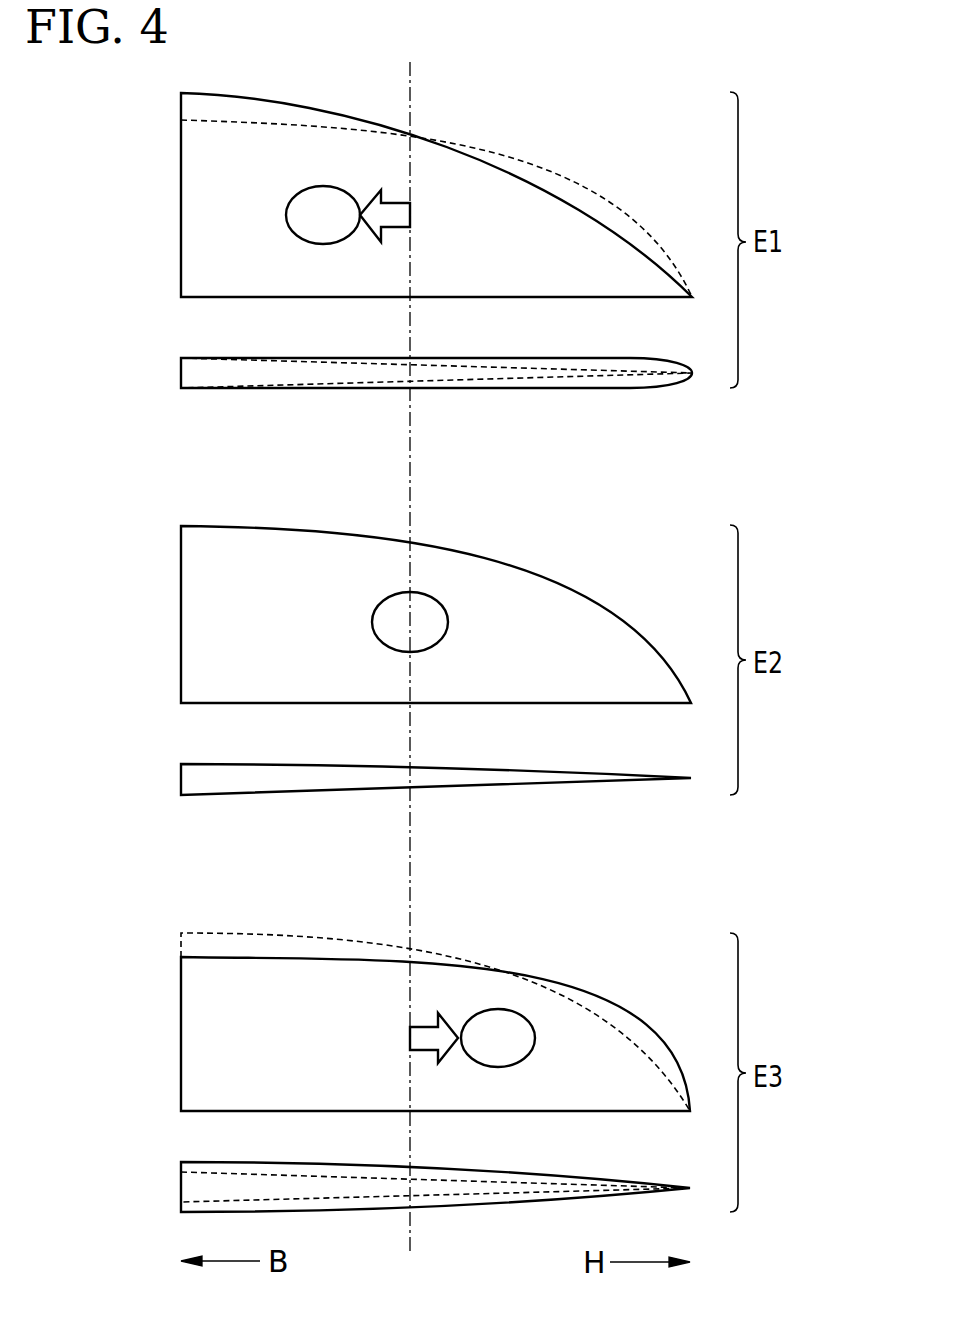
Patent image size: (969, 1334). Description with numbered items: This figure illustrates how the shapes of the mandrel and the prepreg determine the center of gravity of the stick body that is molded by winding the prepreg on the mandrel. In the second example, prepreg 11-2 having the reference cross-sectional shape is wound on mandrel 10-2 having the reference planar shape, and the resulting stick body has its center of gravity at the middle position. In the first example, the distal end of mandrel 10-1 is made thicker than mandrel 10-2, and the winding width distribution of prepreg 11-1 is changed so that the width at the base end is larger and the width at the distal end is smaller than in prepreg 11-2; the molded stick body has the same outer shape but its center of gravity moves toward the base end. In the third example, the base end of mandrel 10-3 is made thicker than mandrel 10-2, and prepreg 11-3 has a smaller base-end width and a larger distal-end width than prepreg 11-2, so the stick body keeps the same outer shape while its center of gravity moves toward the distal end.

The prepreg 11-1 is at (181, 197).
The mandrel 10-1 is at (181, 372).
The prepreg 11-2 is at (181, 615).
The mandrel 10-2 is at (181, 777).
The prepreg 11-3 is at (181, 1033).
The mandrel 10-3 is at (181, 1188).